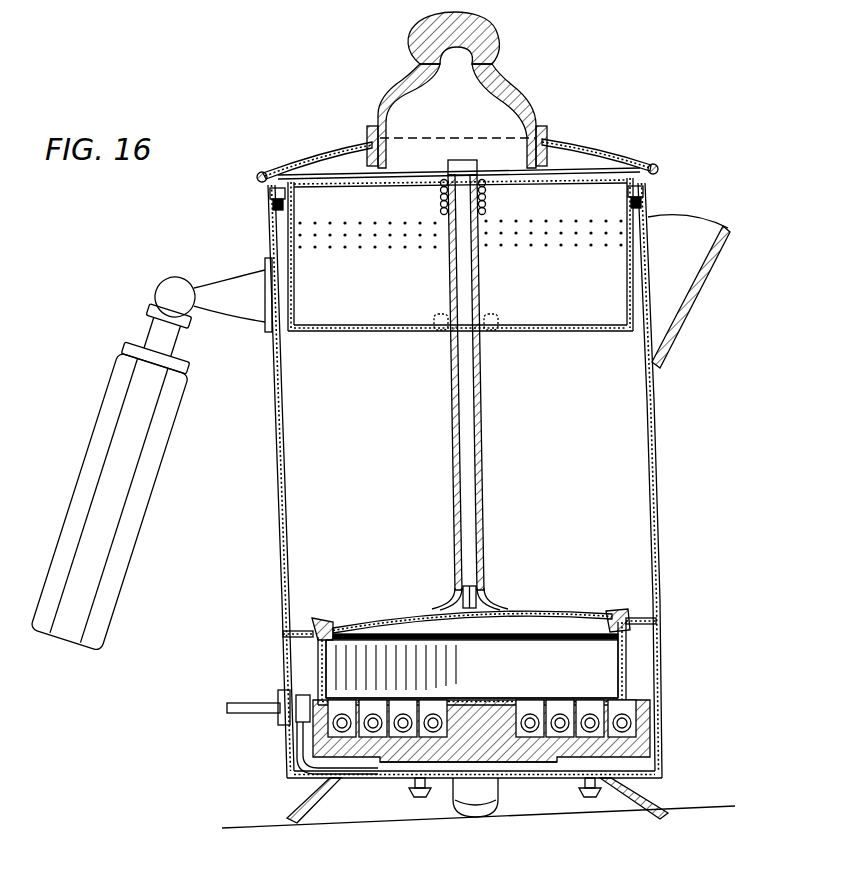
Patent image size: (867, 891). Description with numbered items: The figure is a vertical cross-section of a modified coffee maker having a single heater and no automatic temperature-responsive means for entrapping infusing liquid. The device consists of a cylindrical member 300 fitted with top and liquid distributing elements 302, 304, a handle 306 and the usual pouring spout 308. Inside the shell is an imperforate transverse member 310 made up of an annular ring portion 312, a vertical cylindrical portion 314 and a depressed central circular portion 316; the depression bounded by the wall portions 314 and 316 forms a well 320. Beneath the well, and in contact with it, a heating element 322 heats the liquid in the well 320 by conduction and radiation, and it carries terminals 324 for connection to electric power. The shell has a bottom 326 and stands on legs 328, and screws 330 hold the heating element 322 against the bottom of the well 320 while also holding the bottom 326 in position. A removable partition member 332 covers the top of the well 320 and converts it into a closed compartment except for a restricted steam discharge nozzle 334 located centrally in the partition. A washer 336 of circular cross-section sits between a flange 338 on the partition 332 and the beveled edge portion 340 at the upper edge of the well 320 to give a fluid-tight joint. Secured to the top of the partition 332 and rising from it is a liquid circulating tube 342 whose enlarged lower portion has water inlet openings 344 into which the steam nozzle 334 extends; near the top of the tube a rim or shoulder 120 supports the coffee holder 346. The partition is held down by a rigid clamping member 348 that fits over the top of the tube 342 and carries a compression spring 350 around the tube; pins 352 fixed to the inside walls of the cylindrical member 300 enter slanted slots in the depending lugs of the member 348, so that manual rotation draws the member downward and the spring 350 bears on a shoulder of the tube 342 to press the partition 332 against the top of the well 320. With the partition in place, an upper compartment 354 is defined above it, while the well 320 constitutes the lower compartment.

The rim or shoulder 120 is at (484, 332).
The cylindrical member 300 is at (257, 180).
The top element 302 is at (300, 162).
The liquid distributing element 304 is at (487, 44).
The handle 306 is at (160, 453).
The pouring spout 308 is at (690, 276).
The imperforate transverse member 310 is at (630, 680).
The annular ring portion 312 is at (642, 628).
The vertical cylindrical portion 314 is at (627, 650).
The depressed central circular portion 316 is at (505, 698).
The well 320 is at (375, 665).
The heating element 322 is at (323, 748).
The terminals 324 is at (228, 712).
The bottom 326 is at (522, 778).
The legs 328 is at (300, 824).
The screws 330 is at (420, 798).
The removable partition member 332 is at (553, 612).
The steam discharge nozzle 334 is at (464, 592).
The washer 336 is at (316, 626).
The flange 338 is at (320, 622).
The beveled edge portion 340 is at (306, 648).
The liquid circulating tube 342 is at (484, 413).
The water inlet openings 344 is at (490, 604).
The coffee holder 346 is at (378, 308).
The rigid clamping member 348 is at (583, 172).
The compression spring 350 is at (486, 198).
The pins 352 is at (271, 197).
The upper compartment 354 is at (300, 496).